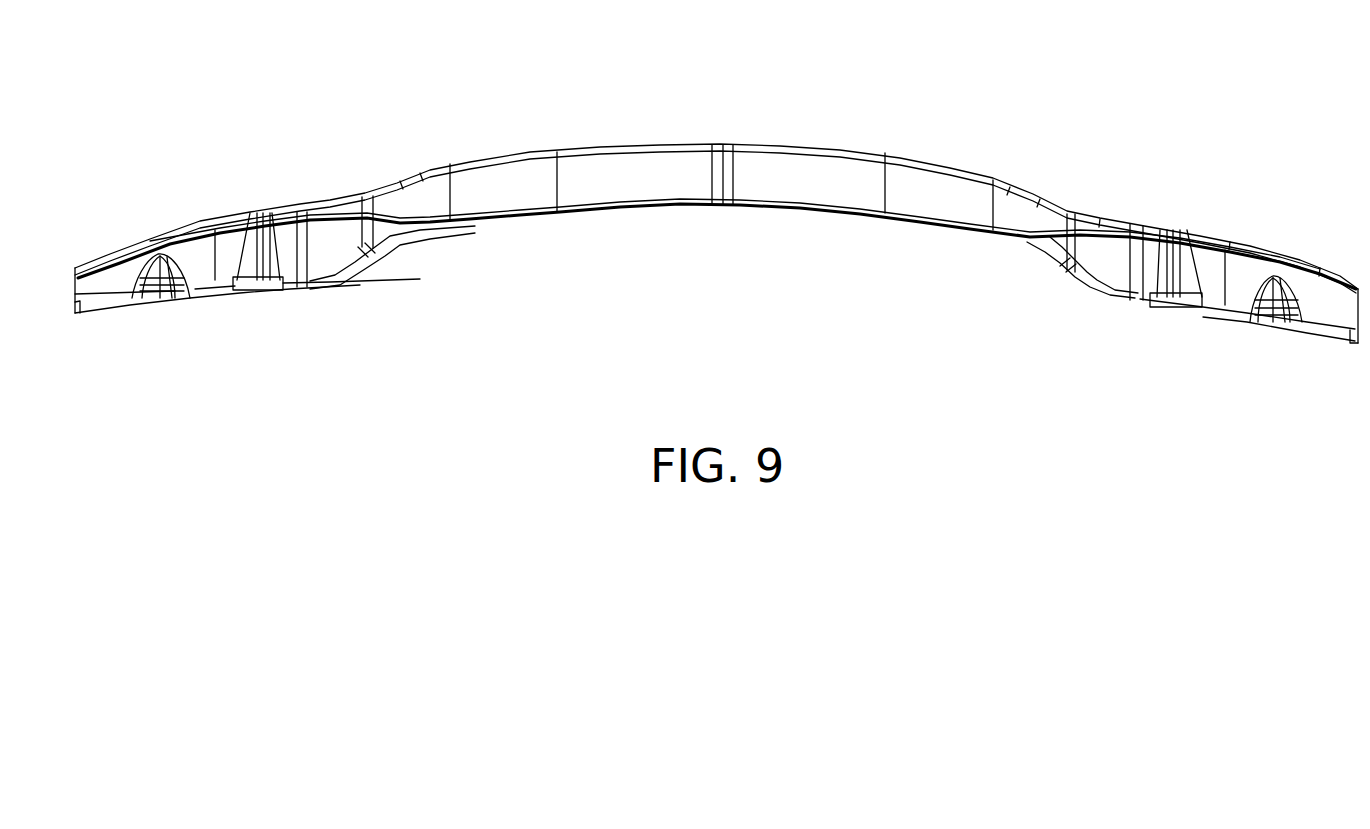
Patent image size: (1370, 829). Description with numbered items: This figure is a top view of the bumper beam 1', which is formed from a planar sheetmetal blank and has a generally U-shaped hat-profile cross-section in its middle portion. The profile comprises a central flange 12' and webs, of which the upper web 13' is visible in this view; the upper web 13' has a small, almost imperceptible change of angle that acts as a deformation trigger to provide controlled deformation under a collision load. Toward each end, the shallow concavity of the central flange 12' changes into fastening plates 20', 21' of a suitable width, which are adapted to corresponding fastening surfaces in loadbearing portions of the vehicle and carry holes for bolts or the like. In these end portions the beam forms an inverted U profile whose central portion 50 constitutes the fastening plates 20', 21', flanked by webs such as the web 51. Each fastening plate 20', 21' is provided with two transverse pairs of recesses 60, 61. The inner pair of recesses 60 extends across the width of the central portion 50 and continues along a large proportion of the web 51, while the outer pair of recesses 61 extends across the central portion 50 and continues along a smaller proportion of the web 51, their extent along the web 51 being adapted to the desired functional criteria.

The bumper beam 1' is at (716, 168).
The central flange 12' is at (741, 125).
The upper web 13' is at (721, 151).
The fastening plate 20' is at (91, 335).
The fastening plate 21' is at (1341, 356).
The central portion 50 is at (715, 366).
The web 51 is at (718, 223).
The inner pair of recesses 60 is at (717, 309).
The outer pair of recesses 61 is at (717, 337).